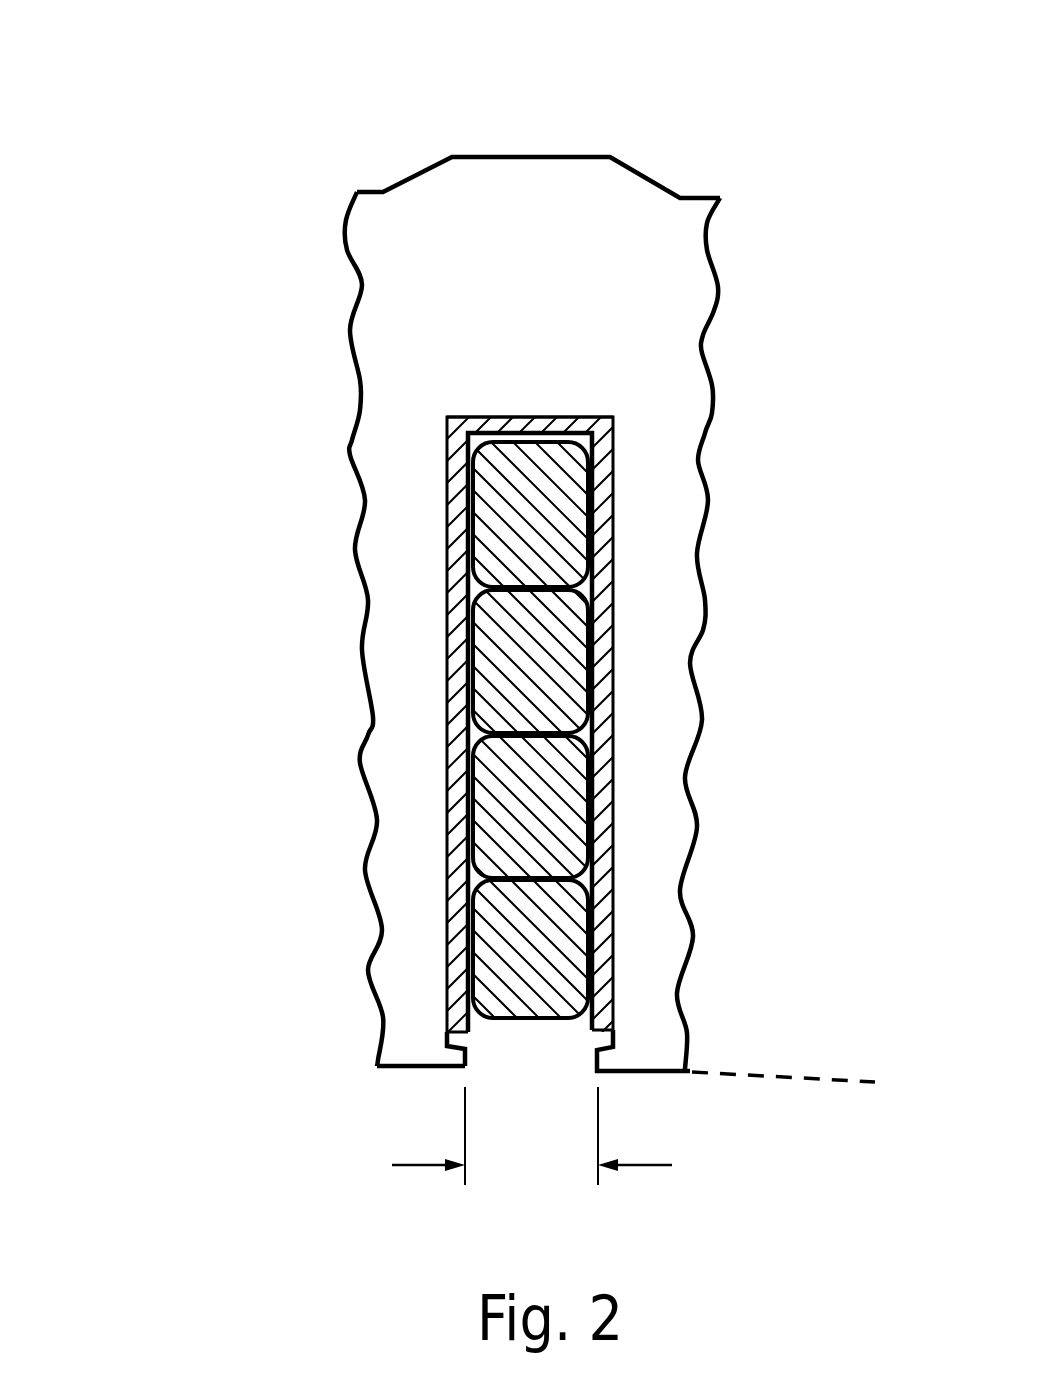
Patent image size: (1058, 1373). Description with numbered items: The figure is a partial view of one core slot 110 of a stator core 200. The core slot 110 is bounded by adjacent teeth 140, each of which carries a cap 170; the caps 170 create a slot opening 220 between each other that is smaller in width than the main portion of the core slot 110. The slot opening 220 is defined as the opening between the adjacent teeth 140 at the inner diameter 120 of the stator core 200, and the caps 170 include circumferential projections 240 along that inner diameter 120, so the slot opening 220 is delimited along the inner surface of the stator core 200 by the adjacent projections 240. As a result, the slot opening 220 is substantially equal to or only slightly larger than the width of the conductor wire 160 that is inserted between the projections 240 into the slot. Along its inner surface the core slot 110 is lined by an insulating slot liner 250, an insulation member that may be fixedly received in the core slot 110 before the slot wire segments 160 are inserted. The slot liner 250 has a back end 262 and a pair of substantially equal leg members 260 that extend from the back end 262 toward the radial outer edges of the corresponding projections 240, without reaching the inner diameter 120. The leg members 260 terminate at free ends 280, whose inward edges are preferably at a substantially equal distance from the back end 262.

The stator core 200 is at (170, 122).
The core slot 110 is at (615, 922).
The inner diameter 120 is at (770, 1077).
The teeth 140 is at (385, 878).
The conductor wire 160 is at (523, 563).
The caps 170 is at (625, 1073).
The slot opening 220 is at (532, 1139).
The projections 240 is at (460, 1068).
The insulating slot liner 250 is at (605, 592).
The leg members 260 is at (448, 685).
The back end 262 is at (550, 417).
The free ends 280 is at (448, 1038).